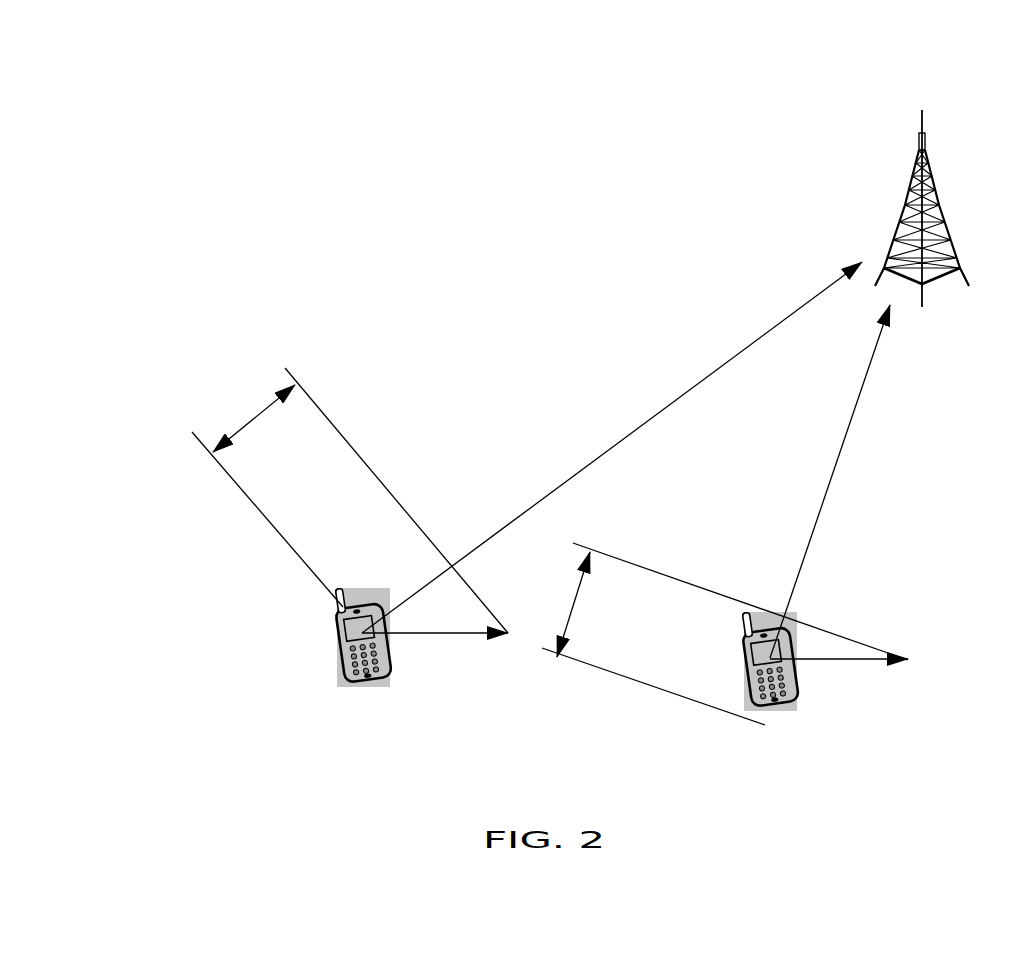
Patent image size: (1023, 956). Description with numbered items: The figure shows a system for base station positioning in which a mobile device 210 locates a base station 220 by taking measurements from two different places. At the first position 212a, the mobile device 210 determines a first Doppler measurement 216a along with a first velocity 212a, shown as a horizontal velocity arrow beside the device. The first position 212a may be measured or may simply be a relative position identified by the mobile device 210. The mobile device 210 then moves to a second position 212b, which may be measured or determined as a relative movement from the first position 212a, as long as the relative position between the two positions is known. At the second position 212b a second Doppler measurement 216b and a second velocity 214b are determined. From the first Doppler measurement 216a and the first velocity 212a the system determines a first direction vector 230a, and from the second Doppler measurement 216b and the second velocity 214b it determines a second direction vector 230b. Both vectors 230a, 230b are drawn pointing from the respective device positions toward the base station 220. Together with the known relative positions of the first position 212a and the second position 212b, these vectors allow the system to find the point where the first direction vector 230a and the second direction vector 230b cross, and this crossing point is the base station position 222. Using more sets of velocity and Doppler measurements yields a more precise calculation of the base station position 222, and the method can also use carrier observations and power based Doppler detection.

The base station 220 is at (879, 168).
The base station position 222 is at (888, 186).
The mobile device 210 is at (520, 682).
The first position 212a is at (352, 668).
The second position 212b is at (785, 711).
The second velocity 214b is at (868, 687).
The first Doppler measurement 216a is at (332, 478).
The second Doppler measurement 216b is at (725, 634).
The first direction vector 230a is at (612, 447).
The second direction vector 230b is at (891, 481).